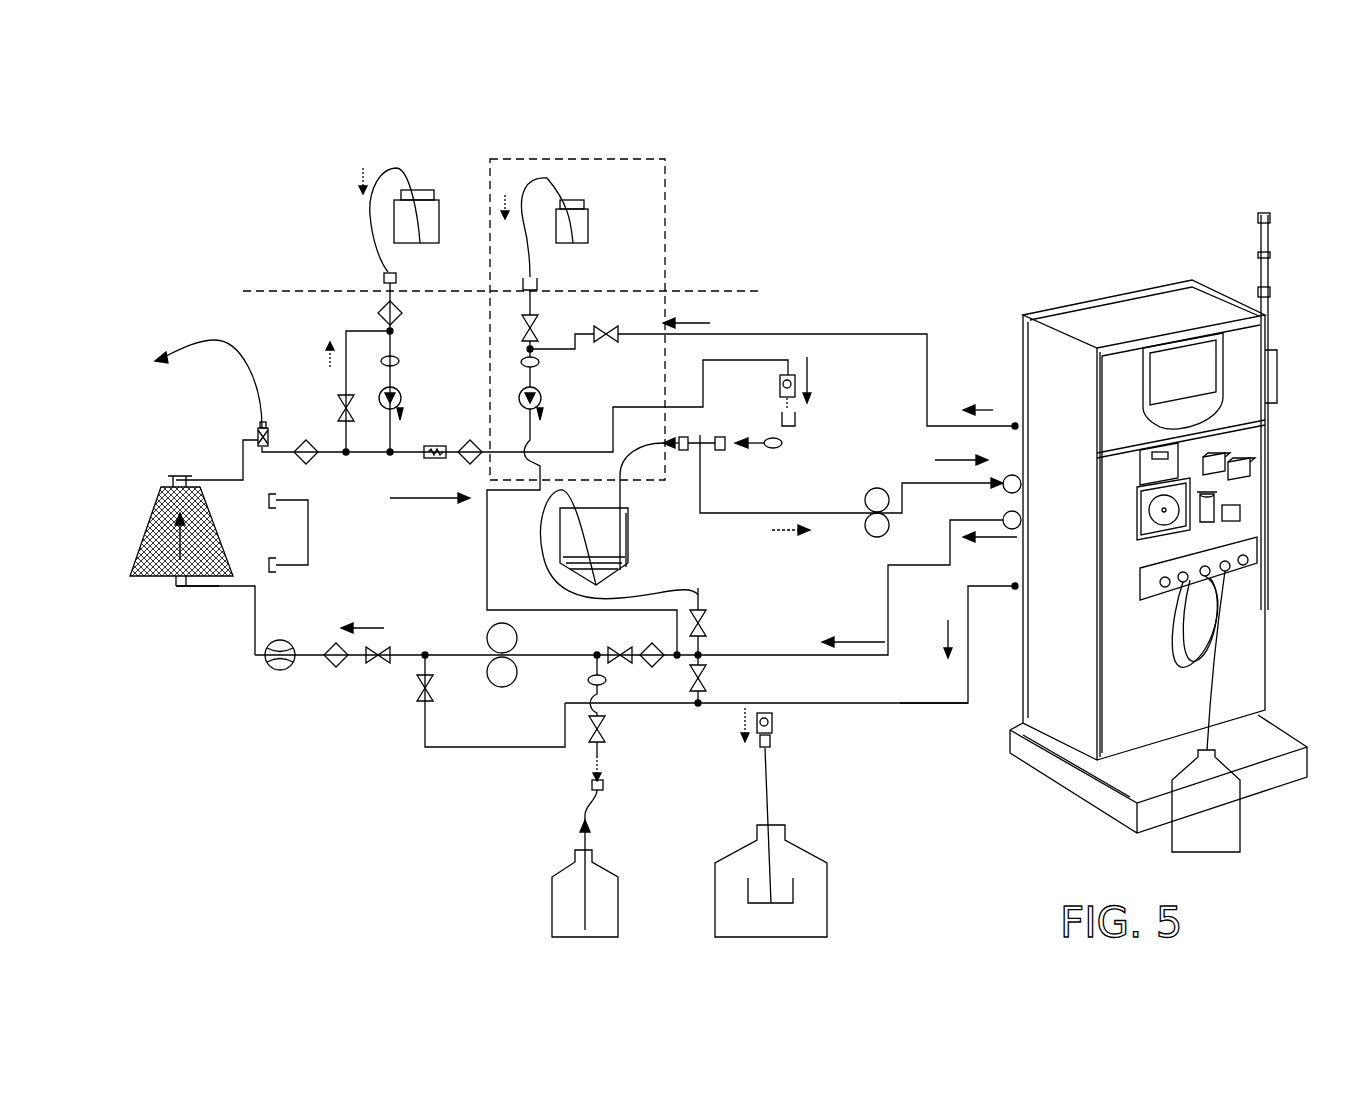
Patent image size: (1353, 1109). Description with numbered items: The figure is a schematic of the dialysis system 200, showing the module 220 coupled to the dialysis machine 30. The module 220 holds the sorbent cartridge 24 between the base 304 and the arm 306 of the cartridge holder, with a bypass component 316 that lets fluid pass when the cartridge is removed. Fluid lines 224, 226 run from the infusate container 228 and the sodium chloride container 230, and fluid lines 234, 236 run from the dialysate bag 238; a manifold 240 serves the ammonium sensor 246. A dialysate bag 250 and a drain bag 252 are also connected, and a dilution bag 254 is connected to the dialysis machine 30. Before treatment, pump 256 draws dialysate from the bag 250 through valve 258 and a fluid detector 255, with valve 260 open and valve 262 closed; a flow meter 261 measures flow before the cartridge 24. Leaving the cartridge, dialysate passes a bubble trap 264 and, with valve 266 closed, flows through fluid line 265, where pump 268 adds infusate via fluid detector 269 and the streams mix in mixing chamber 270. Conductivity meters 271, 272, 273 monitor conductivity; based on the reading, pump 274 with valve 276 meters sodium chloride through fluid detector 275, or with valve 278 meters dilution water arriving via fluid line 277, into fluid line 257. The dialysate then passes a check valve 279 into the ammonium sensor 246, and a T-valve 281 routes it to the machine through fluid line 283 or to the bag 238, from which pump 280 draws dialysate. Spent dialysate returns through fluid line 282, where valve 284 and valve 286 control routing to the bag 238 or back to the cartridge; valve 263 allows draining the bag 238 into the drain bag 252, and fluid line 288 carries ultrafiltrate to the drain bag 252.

The sorbent cartridge 24 is at (146, 525).
The dialysis machine 30 is at (1117, 293).
The dialysis system 200 is at (1082, 240).
The module 220 is at (735, 275).
The fluid line 224 is at (397, 163).
The fluid line 226 is at (533, 177).
The infusate container 228 is at (440, 222).
The sodium chloride container 230 is at (588, 230).
The fluid line 234 is at (623, 493).
The fluid line 236 is at (545, 528).
The dialysate bag 238 is at (630, 542).
The manifold 240 is at (625, 152).
The ammonium sensor 246 is at (780, 437).
The dialysate bag 250 is at (552, 890).
The drain bag 252 is at (827, 877).
The dilution bag 254 is at (1230, 827).
The fluid detector 255 is at (588, 678).
The pump 256 is at (492, 627).
The fluid line 257 is at (317, 659).
The valve 258 is at (603, 727).
The valve 260 is at (377, 667).
The flow meter 261 is at (279, 669).
The valve 262 is at (623, 650).
The valve 263 is at (430, 690).
The bubble trap 264 is at (259, 433).
The fluid line 265 is at (394, 508).
The valve 266 is at (340, 405).
The pump 268 is at (398, 387).
The fluid detector 269 is at (397, 357).
The mixing chamber 270 is at (435, 445).
The conductivity meter 271 is at (307, 462).
The conductivity meter 272 is at (647, 662).
The conductivity meter 273 is at (463, 457).
The pump 274 is at (542, 402).
The fluid detector 275 is at (539, 365).
The valve 276 is at (523, 323).
The fluid line 277 is at (827, 333).
The valve 278 is at (607, 328).
The check valve 279 is at (787, 375).
The pump 280 is at (878, 488).
The T-valve 281 is at (702, 432).
The fluid line 282 is at (885, 605).
The fluid line 283 is at (715, 513).
The valve 284 is at (703, 625).
The valve 286 is at (702, 658).
The fluid line 288 is at (910, 705).
The base 304 is at (219, 585).
The arm 306 is at (217, 477).
The bypass component 316 is at (312, 534).